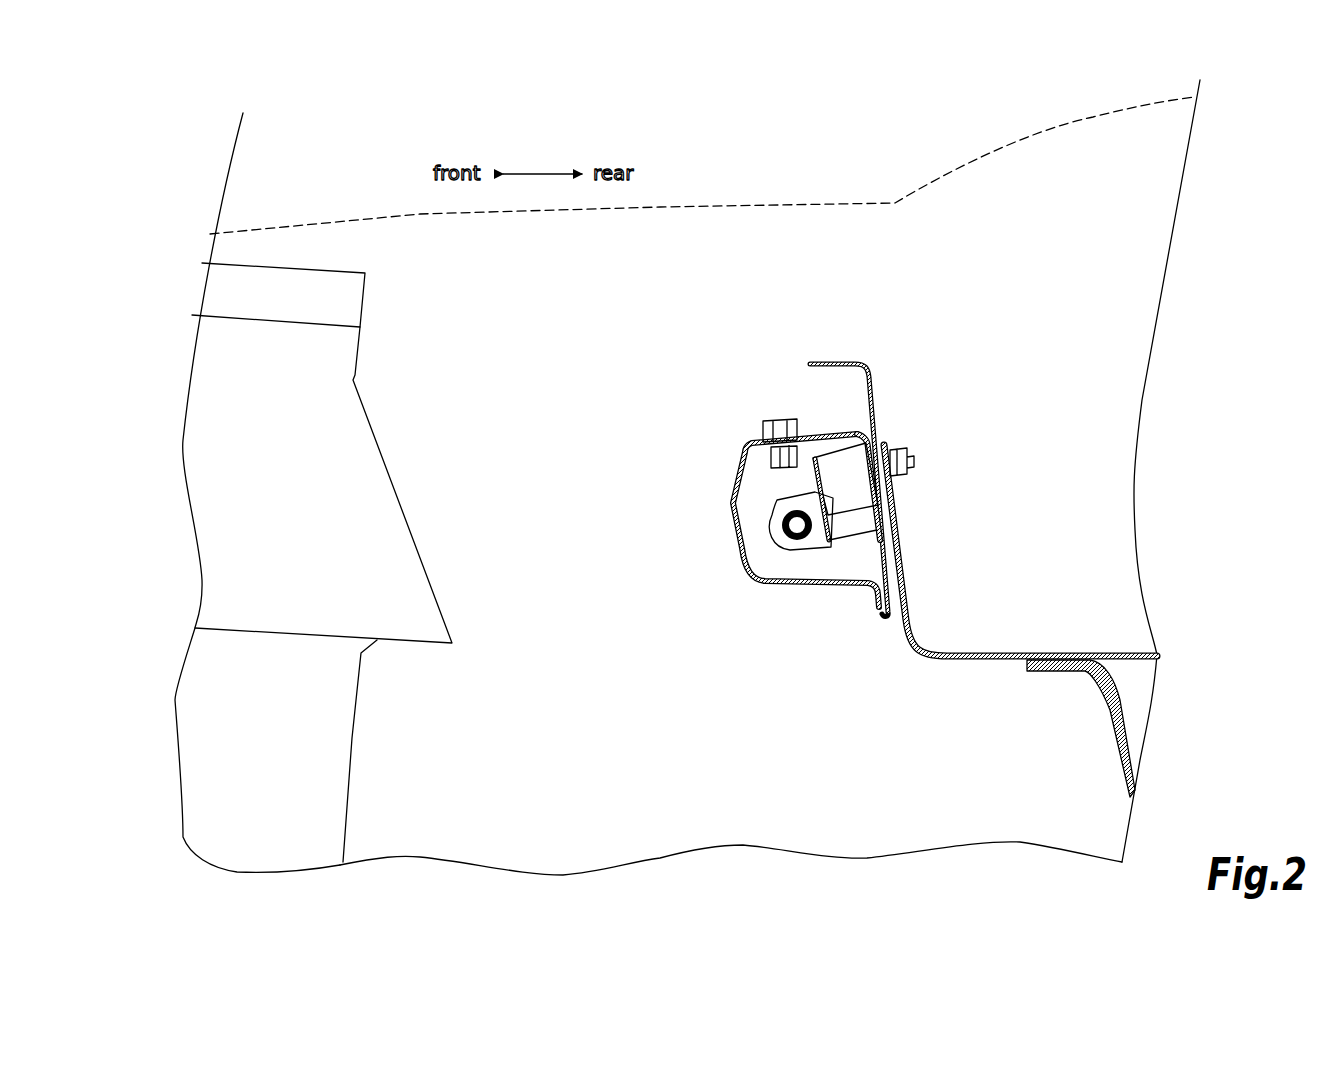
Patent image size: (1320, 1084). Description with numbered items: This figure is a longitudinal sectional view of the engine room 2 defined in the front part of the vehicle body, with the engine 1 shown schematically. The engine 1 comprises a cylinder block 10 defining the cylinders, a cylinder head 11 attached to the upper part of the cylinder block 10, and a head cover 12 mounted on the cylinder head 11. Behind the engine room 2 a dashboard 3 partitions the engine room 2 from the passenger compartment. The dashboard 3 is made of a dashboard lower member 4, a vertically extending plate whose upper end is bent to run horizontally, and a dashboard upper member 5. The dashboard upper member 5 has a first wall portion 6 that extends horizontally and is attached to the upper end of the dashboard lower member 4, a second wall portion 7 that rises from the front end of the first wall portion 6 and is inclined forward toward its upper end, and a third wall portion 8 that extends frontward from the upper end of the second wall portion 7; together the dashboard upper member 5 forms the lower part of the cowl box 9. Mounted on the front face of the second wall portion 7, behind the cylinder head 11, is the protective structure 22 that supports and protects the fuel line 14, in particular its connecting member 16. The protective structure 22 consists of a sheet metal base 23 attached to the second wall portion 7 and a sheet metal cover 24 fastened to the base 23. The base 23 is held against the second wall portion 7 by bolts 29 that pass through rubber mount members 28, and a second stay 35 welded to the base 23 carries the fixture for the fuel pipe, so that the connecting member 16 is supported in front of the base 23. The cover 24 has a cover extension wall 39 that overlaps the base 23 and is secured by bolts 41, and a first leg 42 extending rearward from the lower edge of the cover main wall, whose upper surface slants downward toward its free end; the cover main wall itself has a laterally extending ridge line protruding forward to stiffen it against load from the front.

The engine 1 is at (447, 564).
The engine room 2 is at (727, 769).
The dashboard 3 is at (1043, 728).
The dashboard lower member 4 is at (1117, 740).
The dashboard upper member 5 is at (1020, 550).
The first wall portion 6 is at (1003, 653).
The second wall portion 7 is at (897, 497).
The third wall portion 8 is at (822, 364).
The cowl box 9 is at (1052, 396).
The cylinder block 10 is at (208, 718).
The cylinder head 11 is at (222, 460).
The head cover 12 is at (327, 290).
The fuel line 14 is at (787, 532).
The connecting member 16 is at (811, 560).
The protective structure 22 is at (802, 510).
The base 23 is at (818, 432).
The cover 24 is at (737, 478).
The rubber mount member 28 is at (885, 440).
The bolt 29 is at (912, 460).
The second stay 35 is at (855, 440).
The cover extension wall 39 is at (760, 442).
The bolt 41 is at (777, 422).
The first leg 42 is at (847, 587).